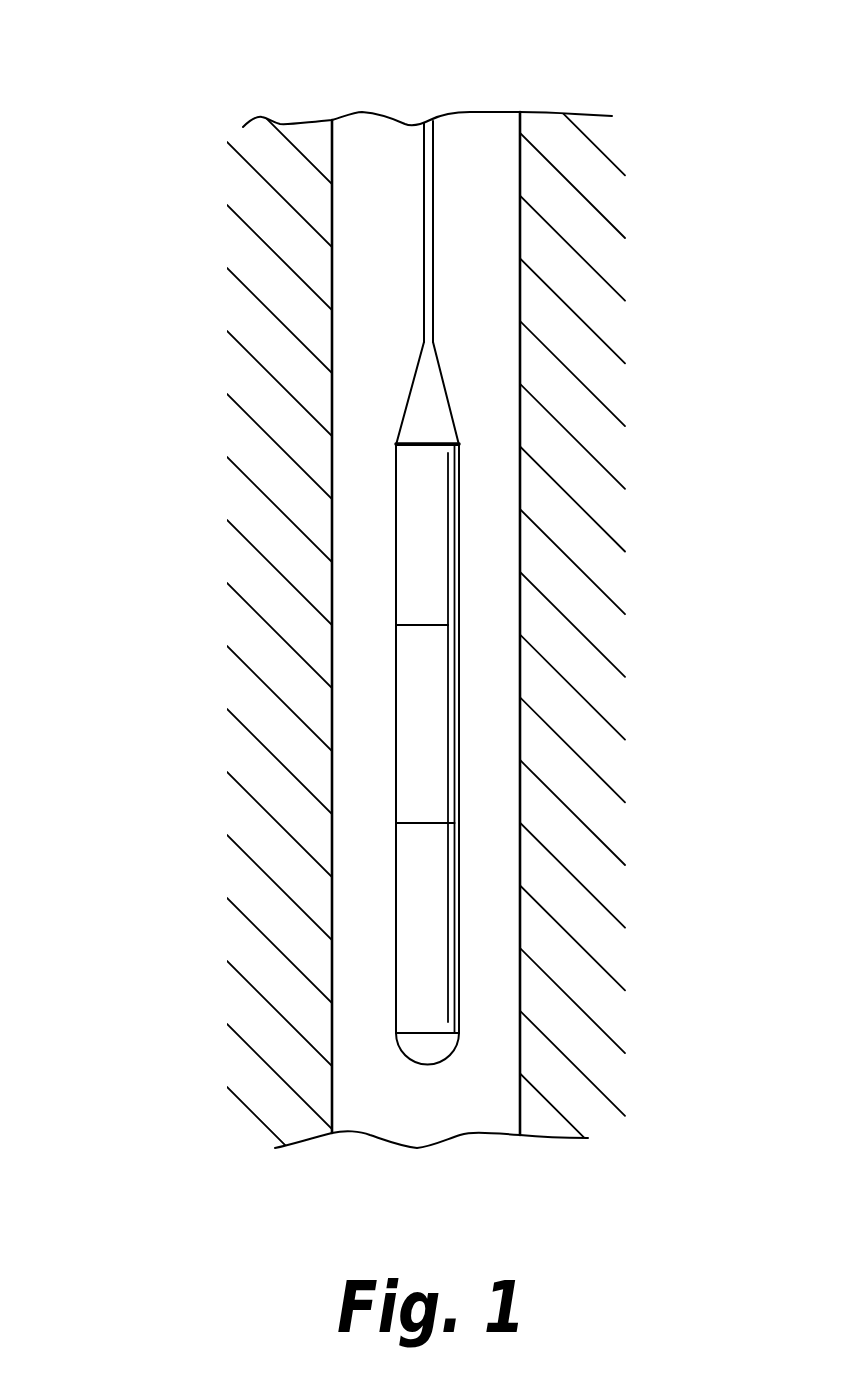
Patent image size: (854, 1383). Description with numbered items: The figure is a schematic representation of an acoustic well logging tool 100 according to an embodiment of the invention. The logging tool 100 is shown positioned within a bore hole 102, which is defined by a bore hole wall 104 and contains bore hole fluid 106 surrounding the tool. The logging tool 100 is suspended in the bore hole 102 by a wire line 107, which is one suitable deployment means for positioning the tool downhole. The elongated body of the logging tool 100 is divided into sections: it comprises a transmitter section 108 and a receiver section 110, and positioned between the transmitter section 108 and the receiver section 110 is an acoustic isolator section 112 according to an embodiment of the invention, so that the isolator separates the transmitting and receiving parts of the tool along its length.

The acoustic well logging tool 100 is at (192, 298).
The bore hole 102 is at (392, 949).
The bore hole wall 104 is at (332, 707).
The bore hole fluid 106 is at (358, 502).
The wire line 107 is at (432, 165).
The transmitter section 108 is at (458, 923).
The receiver section 110 is at (459, 517).
The acoustic isolator section 112 is at (459, 686).